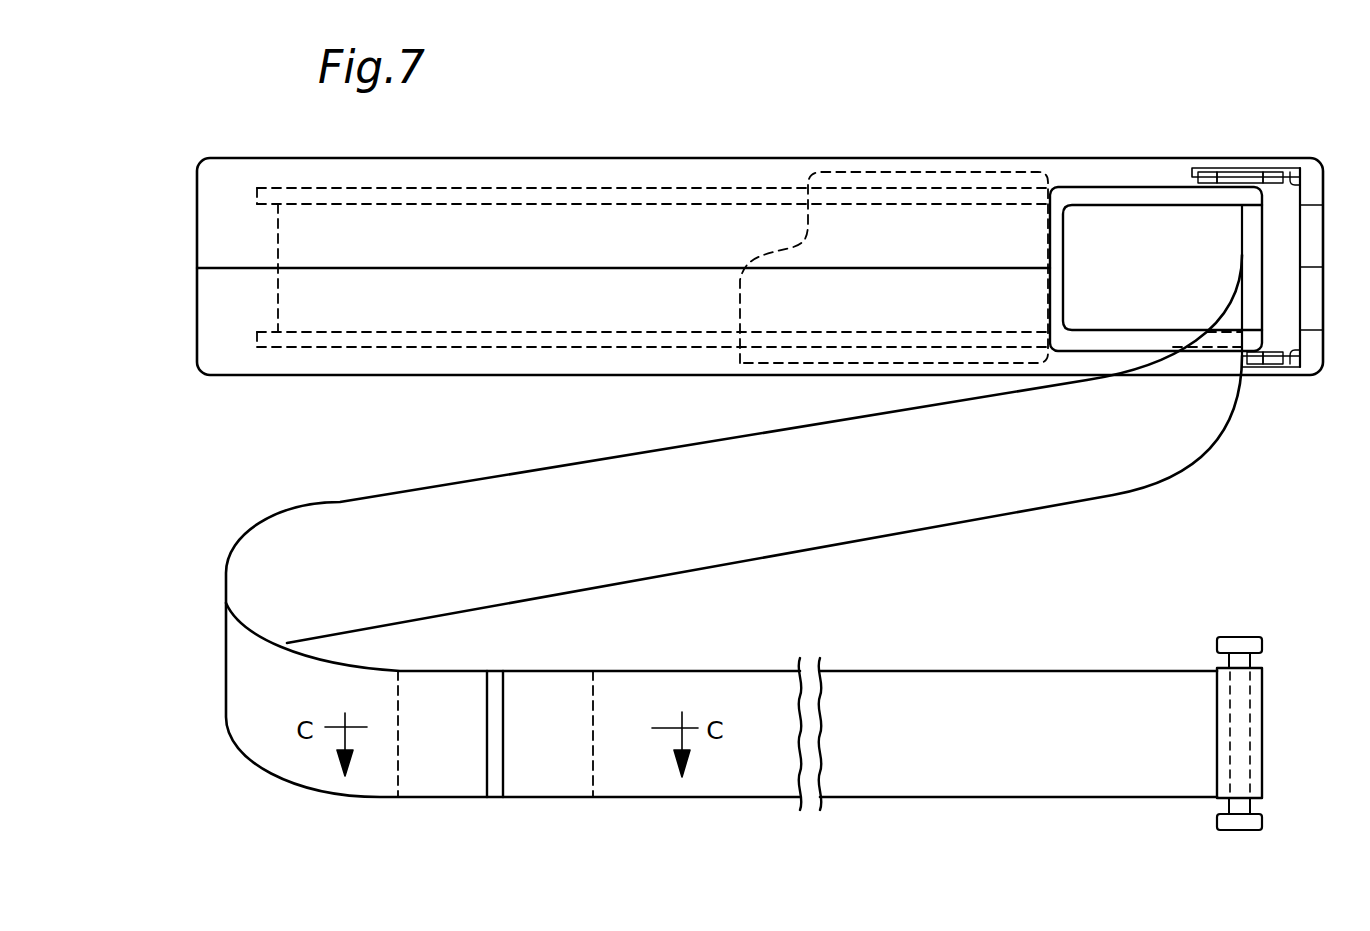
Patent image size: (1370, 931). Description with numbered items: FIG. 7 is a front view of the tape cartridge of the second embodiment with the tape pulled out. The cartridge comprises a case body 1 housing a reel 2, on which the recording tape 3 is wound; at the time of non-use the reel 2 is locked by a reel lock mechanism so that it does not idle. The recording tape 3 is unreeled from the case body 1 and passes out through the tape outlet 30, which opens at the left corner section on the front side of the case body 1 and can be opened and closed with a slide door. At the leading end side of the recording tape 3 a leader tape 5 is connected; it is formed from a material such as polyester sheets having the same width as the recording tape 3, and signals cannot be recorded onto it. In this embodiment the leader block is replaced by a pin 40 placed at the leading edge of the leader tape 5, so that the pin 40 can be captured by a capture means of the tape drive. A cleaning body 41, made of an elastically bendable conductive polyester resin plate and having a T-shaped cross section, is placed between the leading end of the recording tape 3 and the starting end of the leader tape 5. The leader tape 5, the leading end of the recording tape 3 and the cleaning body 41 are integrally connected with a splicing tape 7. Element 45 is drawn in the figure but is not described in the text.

The case body 1 is at (730, 158).
The reel 2 is at (553, 188).
The recording tape 3 is at (912, 487).
The leader tape 5 is at (1008, 760).
The splicing tape 7 is at (593, 733).
The tape outlet 30 is at (1298, 275).
The pin 40 is at (1242, 640).
The cleaning body 41 is at (490, 738).
The internal unit 45 is at (948, 230).